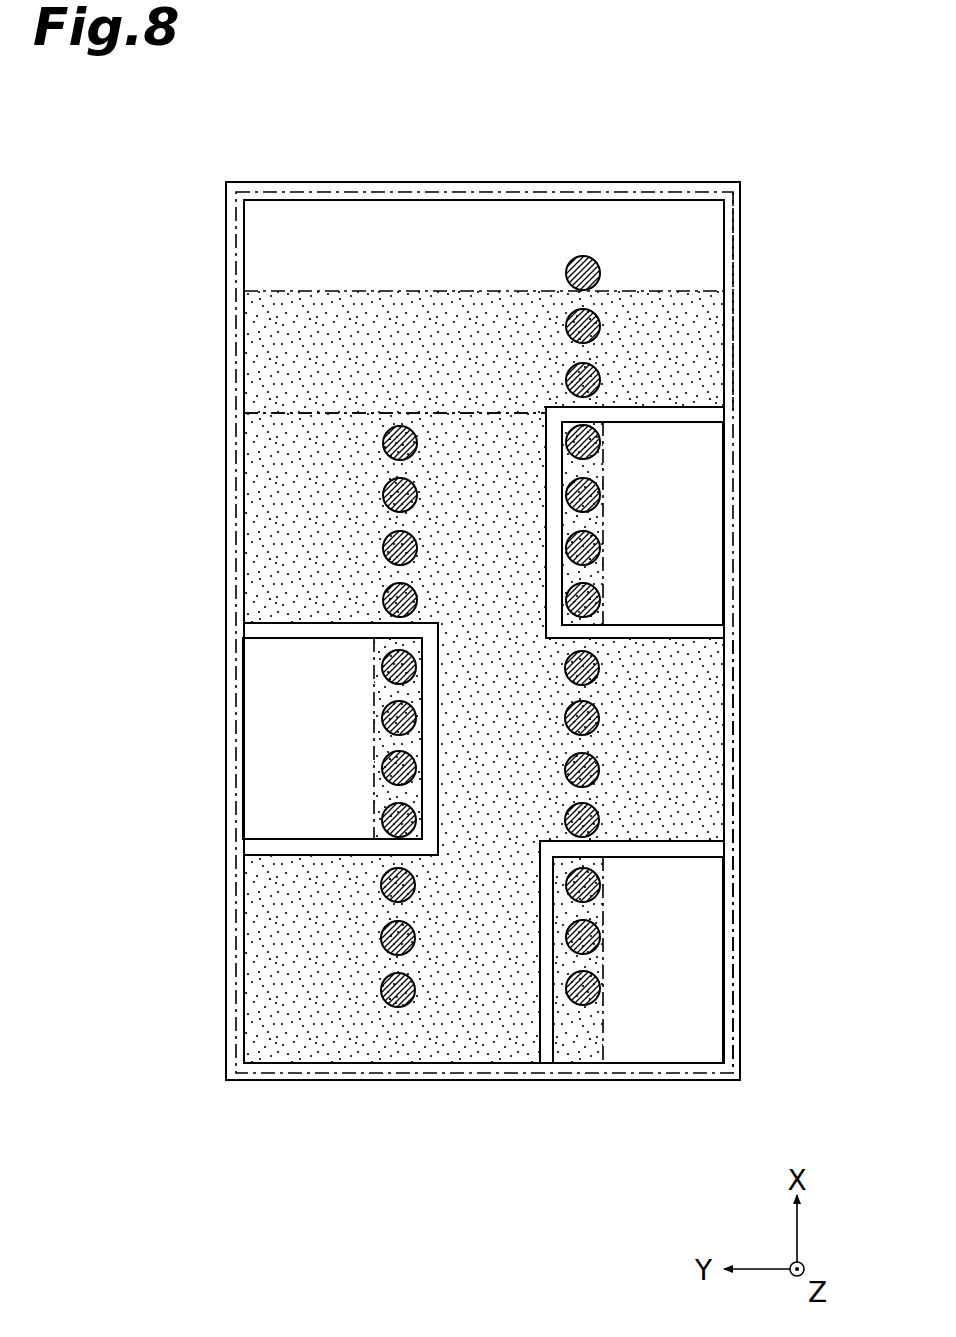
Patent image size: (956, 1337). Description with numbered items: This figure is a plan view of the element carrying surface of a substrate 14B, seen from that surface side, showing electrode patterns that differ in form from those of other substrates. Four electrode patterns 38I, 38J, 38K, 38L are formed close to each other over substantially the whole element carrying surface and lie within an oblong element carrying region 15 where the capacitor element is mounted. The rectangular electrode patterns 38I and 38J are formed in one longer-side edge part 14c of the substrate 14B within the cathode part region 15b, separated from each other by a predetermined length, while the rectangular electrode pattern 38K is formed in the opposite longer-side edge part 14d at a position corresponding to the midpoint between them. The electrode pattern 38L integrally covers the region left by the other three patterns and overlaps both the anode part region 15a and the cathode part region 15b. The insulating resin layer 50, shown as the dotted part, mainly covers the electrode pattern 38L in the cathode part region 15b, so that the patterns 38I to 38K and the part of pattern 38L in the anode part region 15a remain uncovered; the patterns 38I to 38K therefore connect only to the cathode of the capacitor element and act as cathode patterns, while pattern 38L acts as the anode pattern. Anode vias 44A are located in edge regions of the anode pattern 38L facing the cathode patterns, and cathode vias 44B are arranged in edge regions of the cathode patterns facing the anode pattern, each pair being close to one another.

The substrate 14B is at (784, 196).
The longer-side edge part 14c is at (740, 1005).
The longer-side edge part 14d is at (226, 962).
The element carrying region 15 is at (742, 614).
The anode part region 15a is at (733, 318).
The cathode part region 15b is at (733, 796).
The electrode pattern 38I is at (724, 560).
The electrode pattern 38J is at (724, 935).
The electrode pattern 38K is at (243, 752).
The electrode pattern 38L is at (248, 328).
The anode vias 44A is at (572, 380).
The cathode vias 44B is at (598, 598).
The insulating resin layer 50 is at (258, 455).